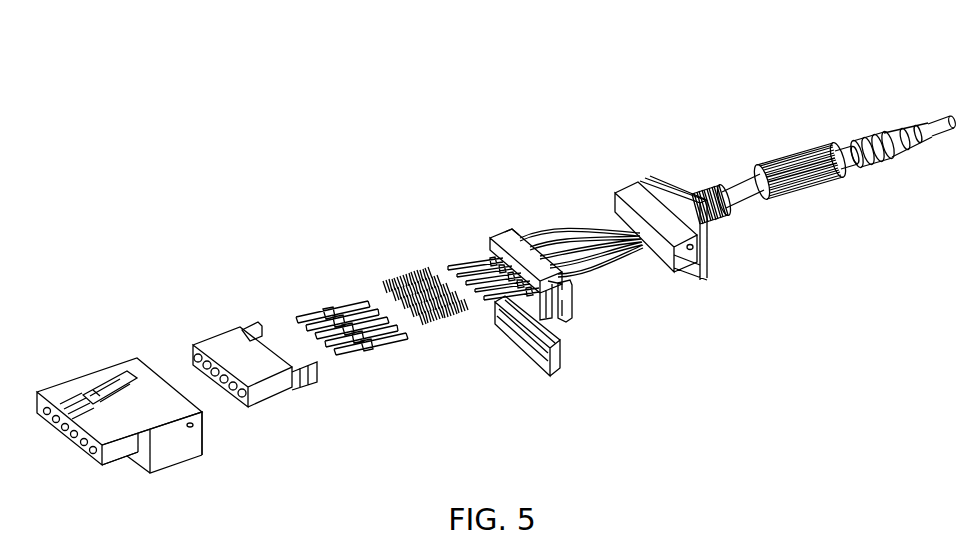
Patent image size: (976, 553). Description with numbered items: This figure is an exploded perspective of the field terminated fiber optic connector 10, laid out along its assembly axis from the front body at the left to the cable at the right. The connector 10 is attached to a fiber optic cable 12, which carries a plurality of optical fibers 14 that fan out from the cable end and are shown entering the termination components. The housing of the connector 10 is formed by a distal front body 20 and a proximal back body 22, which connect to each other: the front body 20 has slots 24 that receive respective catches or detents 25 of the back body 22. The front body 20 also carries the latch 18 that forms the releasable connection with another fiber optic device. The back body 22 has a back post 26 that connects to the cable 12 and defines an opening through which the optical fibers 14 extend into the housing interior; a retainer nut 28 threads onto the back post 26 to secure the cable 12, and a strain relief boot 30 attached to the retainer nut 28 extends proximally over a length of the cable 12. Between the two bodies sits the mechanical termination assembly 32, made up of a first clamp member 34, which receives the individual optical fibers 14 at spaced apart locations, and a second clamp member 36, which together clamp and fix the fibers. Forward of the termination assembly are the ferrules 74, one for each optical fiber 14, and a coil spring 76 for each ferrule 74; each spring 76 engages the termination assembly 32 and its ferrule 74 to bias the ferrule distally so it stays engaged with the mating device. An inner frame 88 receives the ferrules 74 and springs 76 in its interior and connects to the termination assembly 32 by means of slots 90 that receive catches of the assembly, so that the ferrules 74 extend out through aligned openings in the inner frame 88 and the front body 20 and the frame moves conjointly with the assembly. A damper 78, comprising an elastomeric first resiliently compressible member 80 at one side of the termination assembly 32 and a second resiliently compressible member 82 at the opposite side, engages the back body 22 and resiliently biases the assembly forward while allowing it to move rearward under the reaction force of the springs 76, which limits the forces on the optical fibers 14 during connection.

The field terminated fiber optic connector 10 is at (280, 100).
The fiber optic cable 12 is at (940, 118).
The optical fibers 14 is at (590, 222).
The latch 18 is at (103, 392).
The front body 20 is at (178, 455).
The back body 22 is at (634, 195).
The slots 24 is at (192, 427).
The catches or detents 25 is at (692, 250).
The back post 26 is at (707, 198).
The retainer nut 28 is at (795, 165).
The strain relief boot 30 is at (887, 138).
The mechanical termination assembly 32 is at (472, 222).
The first clamp member 34 is at (500, 232).
The second clamp member 36 is at (562, 372).
The ferrules 74 is at (318, 290).
The springs 76 is at (395, 265).
The damper 78 is at (585, 290).
The first resiliently compressible member 80 is at (514, 232).
The second resiliently compressible member 82 is at (572, 292).
The inner frame 88 is at (213, 315).
The slots 90 is at (252, 325).